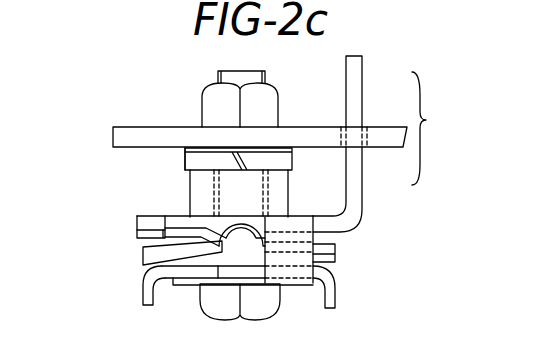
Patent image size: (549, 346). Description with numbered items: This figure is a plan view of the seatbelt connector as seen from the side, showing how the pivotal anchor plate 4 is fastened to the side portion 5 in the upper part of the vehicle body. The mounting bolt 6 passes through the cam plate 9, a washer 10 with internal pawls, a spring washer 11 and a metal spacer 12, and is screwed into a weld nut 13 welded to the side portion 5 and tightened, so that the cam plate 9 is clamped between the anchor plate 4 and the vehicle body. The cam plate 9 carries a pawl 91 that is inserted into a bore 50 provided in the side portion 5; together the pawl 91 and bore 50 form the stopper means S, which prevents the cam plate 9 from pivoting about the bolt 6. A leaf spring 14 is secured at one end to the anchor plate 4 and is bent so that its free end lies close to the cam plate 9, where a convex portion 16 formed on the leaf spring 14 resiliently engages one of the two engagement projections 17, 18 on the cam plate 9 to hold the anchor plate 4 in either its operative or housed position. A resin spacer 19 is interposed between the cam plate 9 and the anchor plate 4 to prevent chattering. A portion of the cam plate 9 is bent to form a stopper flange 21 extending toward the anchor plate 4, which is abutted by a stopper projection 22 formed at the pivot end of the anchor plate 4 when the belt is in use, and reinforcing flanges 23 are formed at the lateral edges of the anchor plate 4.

The anchor plate 4 is at (158, 270).
The side portion 5 is at (398, 139).
The mounting bolt 6 is at (244, 75).
The cam plate 9 is at (328, 214).
The washer with internal pawls 10 is at (291, 151).
The spring washer 11 is at (188, 165).
The spacer 12 is at (198, 192).
The weld nut 13 is at (208, 95).
The leaf spring 14 is at (142, 255).
The convex portion 16 is at (240, 225).
The engagement projection 17 is at (212, 222).
The engagement projection 18 is at (145, 234).
The resin spacer 19 is at (176, 233).
The stopper flange 21 is at (337, 258).
The stopper projection 22 is at (228, 272).
The reinforcing flange 23 is at (142, 288).
The bore 50 is at (364, 150).
The pawl 91 is at (359, 85).
The stopper means S is at (428, 128).